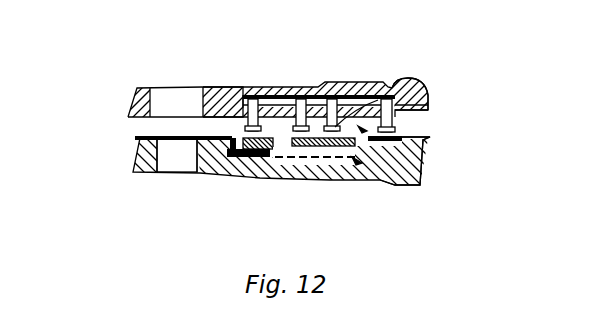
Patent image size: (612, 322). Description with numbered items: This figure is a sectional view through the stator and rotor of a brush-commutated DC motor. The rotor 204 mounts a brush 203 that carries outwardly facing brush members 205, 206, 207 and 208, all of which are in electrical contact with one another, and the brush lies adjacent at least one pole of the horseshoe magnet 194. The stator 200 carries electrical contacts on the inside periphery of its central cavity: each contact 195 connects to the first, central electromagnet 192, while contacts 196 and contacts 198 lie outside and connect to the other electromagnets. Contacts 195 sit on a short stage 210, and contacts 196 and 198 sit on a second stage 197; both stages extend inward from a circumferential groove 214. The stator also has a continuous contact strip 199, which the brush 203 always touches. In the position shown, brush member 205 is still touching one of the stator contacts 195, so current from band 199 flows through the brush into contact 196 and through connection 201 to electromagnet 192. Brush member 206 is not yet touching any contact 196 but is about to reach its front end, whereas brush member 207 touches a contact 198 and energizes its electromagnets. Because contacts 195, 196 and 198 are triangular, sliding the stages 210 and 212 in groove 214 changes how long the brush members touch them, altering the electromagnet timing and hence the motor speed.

The central electromagnet 192 is at (168, 165).
The horseshoe magnet 194 is at (165, 97).
The stator electrical contacts 195 is at (262, 88).
The stator electrical contacts 196 is at (283, 150).
The second stage 197 is at (386, 100).
The stator electrical contacts 198 is at (330, 150).
The continuous contact strip 199 is at (398, 127).
The stator 200 is at (140, 152).
The connection 201 is at (228, 162).
The brush 203 is at (408, 79).
The rotor 204 is at (418, 108).
The brush member 205 is at (213, 89).
The brush member 206 is at (285, 88).
The brush member 207 is at (363, 100).
The brush member 208 is at (420, 105).
The short stage 210 is at (270, 150).
The stage 212 is at (370, 168).
The circumferential groove 214 is at (402, 155).